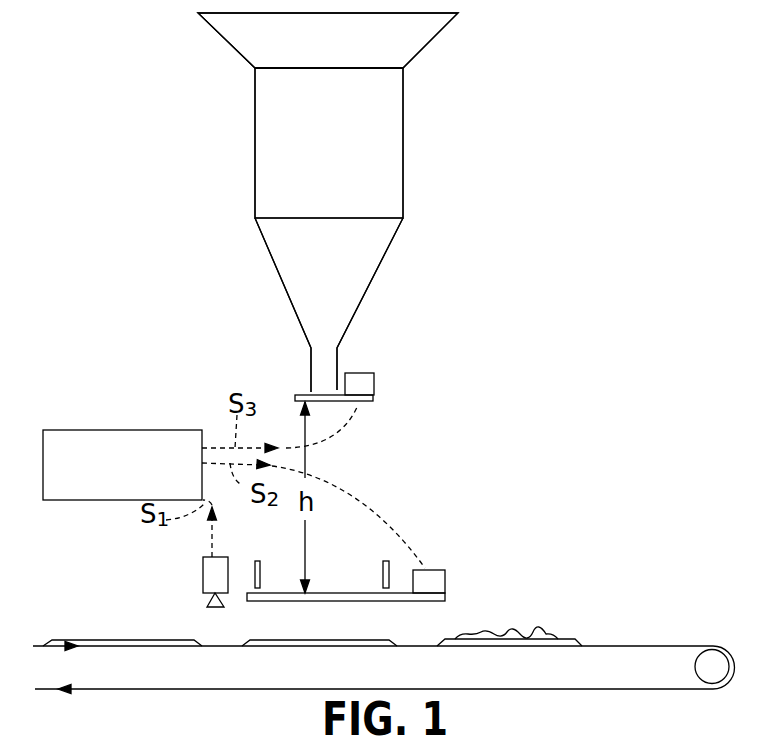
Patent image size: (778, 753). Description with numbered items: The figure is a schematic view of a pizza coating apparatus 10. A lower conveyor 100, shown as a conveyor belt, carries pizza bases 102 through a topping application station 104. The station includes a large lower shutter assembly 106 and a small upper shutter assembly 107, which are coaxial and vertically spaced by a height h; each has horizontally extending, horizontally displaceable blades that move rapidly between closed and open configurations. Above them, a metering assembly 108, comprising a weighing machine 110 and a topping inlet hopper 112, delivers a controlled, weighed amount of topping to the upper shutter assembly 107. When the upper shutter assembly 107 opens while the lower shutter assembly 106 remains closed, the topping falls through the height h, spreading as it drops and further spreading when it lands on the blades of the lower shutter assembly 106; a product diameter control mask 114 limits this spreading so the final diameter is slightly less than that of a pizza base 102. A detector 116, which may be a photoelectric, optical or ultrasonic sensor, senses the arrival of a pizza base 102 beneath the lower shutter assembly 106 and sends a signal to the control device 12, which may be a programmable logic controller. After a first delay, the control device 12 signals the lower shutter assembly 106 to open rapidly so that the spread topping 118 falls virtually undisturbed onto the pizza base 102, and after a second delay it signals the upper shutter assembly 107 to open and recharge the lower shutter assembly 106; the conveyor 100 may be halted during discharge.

The pizza coating apparatus 10 is at (152, 307).
The control device 12 is at (152, 430).
The lower conveyor 100 is at (712, 648).
The pizza bases 102 is at (243, 642).
The topping application station 104 is at (503, 205).
The lower shutter assembly 106 is at (482, 585).
The upper shutter assembly 107 is at (446, 391).
The metering assembly 108 is at (232, 182).
The weighing machine 110 is at (382, 137).
The topping inlet hopper 112 is at (408, 42).
The product diameter control mask 114 is at (260, 567).
The detector 116 is at (203, 571).
The spread topping 118 is at (557, 636).